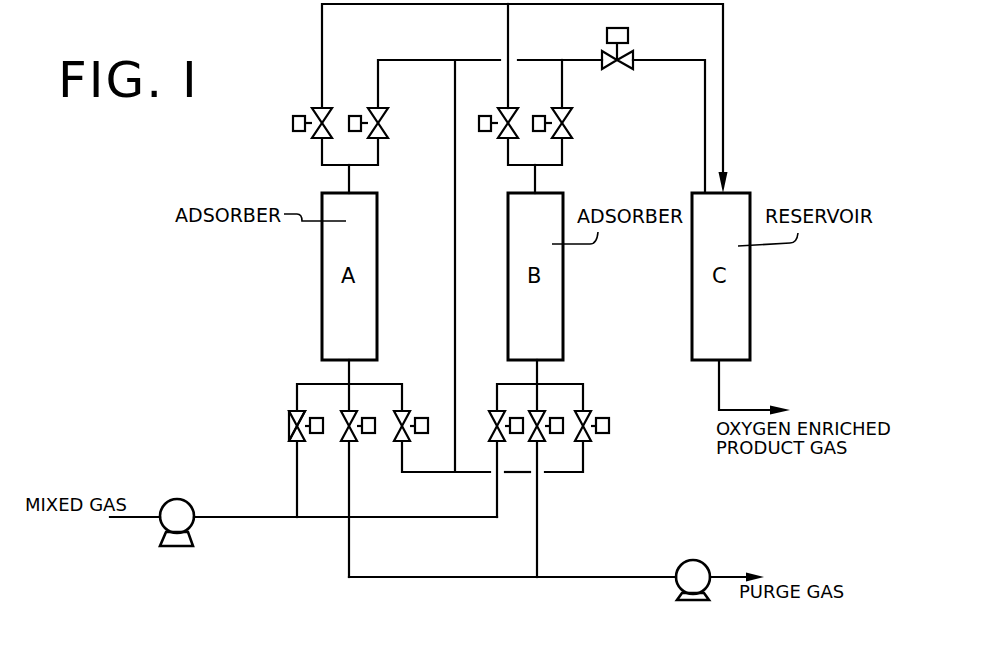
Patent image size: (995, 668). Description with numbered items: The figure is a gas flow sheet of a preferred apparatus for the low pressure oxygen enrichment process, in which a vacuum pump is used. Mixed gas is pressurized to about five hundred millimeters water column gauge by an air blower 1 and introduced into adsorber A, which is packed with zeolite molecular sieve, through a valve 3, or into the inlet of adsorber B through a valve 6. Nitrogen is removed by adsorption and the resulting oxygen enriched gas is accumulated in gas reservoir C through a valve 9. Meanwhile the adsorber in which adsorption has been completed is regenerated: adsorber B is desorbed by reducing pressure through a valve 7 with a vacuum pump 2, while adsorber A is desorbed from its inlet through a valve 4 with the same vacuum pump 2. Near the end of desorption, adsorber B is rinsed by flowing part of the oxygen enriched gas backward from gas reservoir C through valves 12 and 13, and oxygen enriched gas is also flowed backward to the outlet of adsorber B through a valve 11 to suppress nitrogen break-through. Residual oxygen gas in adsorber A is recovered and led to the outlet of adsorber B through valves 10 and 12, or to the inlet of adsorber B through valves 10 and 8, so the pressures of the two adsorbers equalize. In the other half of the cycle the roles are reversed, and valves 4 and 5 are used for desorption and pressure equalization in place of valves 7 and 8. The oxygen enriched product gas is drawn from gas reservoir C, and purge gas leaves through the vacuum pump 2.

The air blower 1 is at (177, 537).
The vacuum pump 2 is at (693, 592).
The valve 3 is at (299, 439).
The valve 4 is at (352, 439).
The valve 5 is at (403, 439).
The valve 6 is at (499, 439).
The valve 7 is at (540, 439).
The valve 8 is at (586, 439).
The valve 9 is at (312, 137).
The valve 10 is at (368, 137).
The valve 11 is at (498, 137).
The valve 12 is at (552, 137).
The valve 13 is at (617, 63).